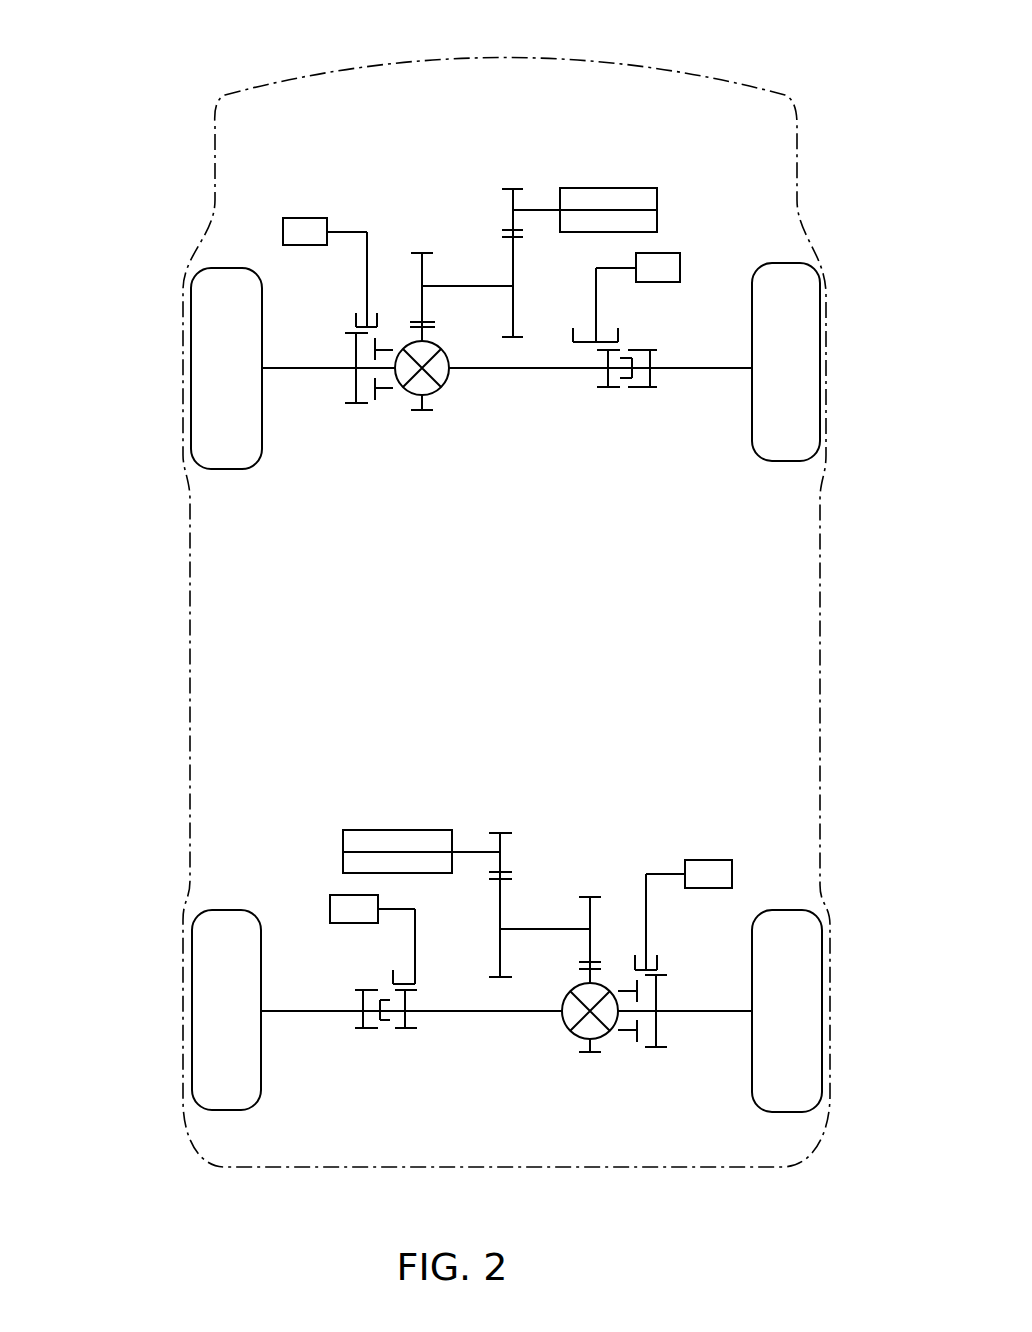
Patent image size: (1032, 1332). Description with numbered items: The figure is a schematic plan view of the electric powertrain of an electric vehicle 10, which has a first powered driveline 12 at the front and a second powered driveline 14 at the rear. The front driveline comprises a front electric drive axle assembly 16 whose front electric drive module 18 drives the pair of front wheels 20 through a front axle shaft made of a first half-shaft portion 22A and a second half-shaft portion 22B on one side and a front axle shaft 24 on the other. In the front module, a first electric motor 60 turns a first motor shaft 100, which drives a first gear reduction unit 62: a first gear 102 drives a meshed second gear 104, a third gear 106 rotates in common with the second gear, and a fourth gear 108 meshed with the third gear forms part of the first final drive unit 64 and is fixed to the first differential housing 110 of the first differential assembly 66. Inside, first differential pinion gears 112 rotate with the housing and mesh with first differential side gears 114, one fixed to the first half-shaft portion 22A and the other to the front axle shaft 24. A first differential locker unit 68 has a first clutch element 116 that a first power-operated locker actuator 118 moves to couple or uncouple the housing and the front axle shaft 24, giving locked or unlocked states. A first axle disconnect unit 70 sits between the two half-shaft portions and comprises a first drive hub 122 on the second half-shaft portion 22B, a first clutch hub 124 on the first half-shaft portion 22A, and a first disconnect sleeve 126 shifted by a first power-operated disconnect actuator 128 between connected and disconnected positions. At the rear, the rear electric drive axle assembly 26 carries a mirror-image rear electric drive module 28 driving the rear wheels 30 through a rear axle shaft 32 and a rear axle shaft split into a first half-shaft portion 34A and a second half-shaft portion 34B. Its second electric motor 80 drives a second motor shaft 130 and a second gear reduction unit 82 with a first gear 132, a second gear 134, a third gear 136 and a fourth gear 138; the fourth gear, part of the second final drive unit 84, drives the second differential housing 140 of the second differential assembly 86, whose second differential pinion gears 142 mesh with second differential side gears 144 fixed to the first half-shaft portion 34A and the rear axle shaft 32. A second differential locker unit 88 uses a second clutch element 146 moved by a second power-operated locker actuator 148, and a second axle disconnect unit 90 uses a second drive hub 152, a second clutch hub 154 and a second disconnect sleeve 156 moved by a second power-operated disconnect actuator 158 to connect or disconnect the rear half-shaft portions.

The electric vehicle 10 is at (812, 46).
The first powered driveline 12 is at (262, 183).
The second powered driveline 14 is at (797, 846).
The front electric drive axle assembly 16 is at (703, 277).
The front electric drive module 18 is at (404, 222).
The front wheels 20 is at (191, 338).
The first half-shaft portion 22A is at (522, 370).
The second half-shaft portion 22B is at (715, 367).
The front axle shaft 24 is at (302, 370).
The rear electric drive axle assembly 26 is at (333, 1126).
The rear electric drive module 28 is at (624, 815).
The rear wheels 30 is at (191, 1027).
The rear axle shaft 32 is at (720, 1012).
The first half-shaft portion 34A is at (468, 1013).
The second half-shaft portion 34B is at (303, 1013).
The first electric motor 60 is at (627, 188).
The first gear reduction unit 62 is at (484, 257).
The first final drive unit 64 is at (446, 334).
The first differential assembly 66 is at (454, 389).
The first differential locker unit 68 is at (353, 476).
The first axle disconnect unit 70 is at (640, 405).
The second electric motor 80 is at (373, 830).
The second gear reduction unit 82 is at (549, 842).
The second final drive unit 84 is at (613, 945).
The second differential assembly 86 is at (556, 1026).
The second differential locker unit 88 is at (682, 1040).
The second axle disconnect unit 90 is at (394, 1060).
The first motor shaft 100 is at (540, 209).
The first gear 102 is at (505, 188).
The second gear 104 is at (520, 238).
The third gear 106 is at (424, 252).
The fourth gear 108 is at (410, 328).
The first differential housing 110 is at (387, 395).
The first differential pinion gears 112 is at (437, 396).
The first differential side gears 114 is at (437, 367).
The first clutch element 116 is at (352, 318).
The first power-operated locker actuator 118 is at (299, 218).
The first drive hub 122 is at (598, 392).
The first clutch hub 124 is at (644, 388).
The first disconnect sleeve 126 is at (572, 338).
The first power-operated disconnect actuator 128 is at (675, 255).
The second motor shaft 130 is at (465, 851).
The first gear 132 is at (502, 832).
The second gear 134 is at (499, 900).
The third gear 136 is at (592, 896).
The fourth gear 138 is at (586, 976).
The second differential housing 140 is at (626, 1030).
The second differential pinion gears 142 is at (582, 1030).
The second differential side gears 144 is at (573, 1006).
The second clutch element 146 is at (658, 962).
The second power-operated locker actuator 148 is at (722, 860).
The second drive hub 152 is at (397, 1030).
The second clutch hub 154 is at (356, 992).
The second disconnect sleeve 156 is at (436, 982).
The second power-operated disconnect actuator 158 is at (330, 900).